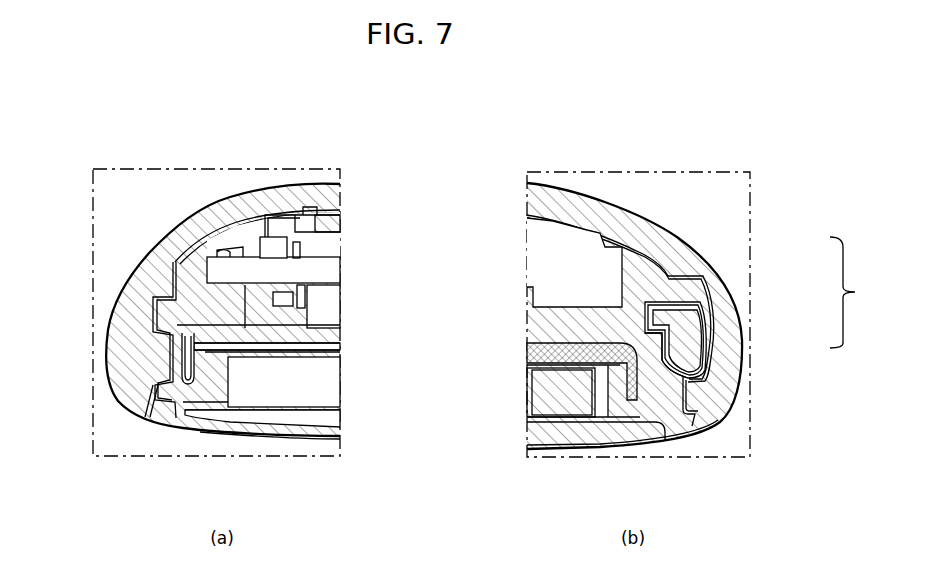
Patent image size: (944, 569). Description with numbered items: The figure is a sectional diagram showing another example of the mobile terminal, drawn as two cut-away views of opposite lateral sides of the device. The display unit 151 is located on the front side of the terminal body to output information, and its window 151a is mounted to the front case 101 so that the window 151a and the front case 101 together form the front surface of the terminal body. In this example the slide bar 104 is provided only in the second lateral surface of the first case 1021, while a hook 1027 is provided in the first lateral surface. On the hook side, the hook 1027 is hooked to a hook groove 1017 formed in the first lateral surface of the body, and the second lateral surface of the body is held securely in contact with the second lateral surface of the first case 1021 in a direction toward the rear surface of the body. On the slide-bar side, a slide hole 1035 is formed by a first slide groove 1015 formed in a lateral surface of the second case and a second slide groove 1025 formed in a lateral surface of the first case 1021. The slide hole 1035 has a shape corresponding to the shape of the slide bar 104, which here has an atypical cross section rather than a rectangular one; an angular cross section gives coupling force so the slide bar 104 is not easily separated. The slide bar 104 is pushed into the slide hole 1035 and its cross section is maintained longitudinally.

The first case 1021 is at (240, 207).
The hook 1027 is at (163, 360).
The hook groove 1017 is at (148, 415).
The display unit 151 is at (327, 377).
The window 151a is at (283, 417).
The front case 101 is at (542, 256).
The first slide groove 1015 is at (662, 299).
The second slide groove 1025 is at (700, 362).
The slide hole 1035 is at (862, 292).
The slide bar 104 is at (705, 368).